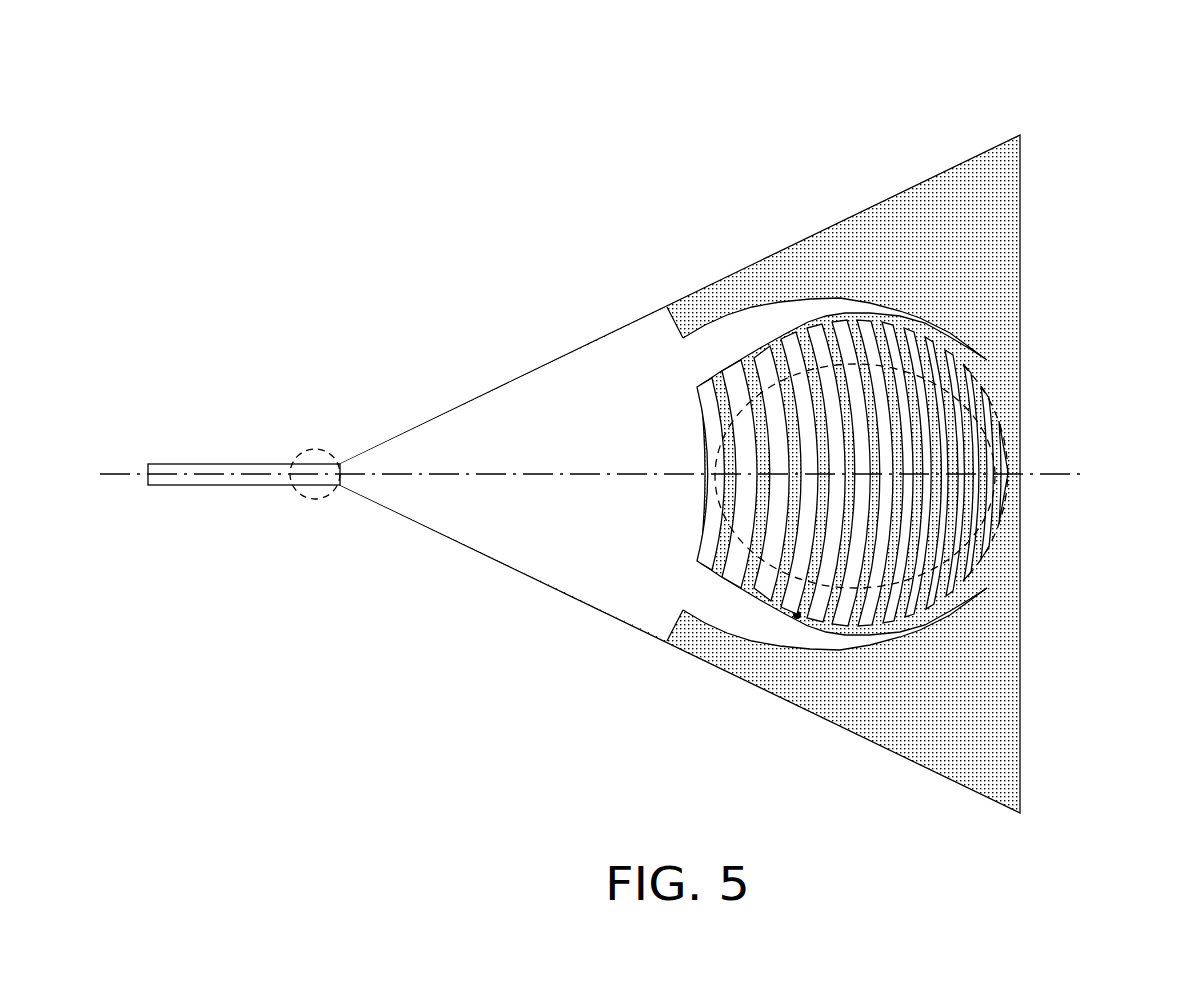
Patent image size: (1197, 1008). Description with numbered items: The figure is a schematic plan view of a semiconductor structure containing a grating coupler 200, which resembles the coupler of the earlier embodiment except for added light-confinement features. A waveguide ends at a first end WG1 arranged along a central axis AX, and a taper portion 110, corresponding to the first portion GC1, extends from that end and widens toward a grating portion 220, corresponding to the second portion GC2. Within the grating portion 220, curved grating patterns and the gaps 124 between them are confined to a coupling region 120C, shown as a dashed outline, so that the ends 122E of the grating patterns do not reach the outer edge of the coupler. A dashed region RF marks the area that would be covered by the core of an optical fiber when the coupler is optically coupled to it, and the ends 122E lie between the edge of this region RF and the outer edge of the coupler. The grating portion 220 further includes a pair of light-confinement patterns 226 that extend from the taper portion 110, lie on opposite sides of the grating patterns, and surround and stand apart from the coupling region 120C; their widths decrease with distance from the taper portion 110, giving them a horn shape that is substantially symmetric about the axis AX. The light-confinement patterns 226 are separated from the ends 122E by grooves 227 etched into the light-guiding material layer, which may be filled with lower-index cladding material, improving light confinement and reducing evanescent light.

The grating coupler 200 is at (799, 93).
The grating portion 220 is at (885, 222).
The taper portion 110 is at (533, 398).
The grooves 227 is at (728, 357).
The light-confinement patterns 226 is at (775, 318).
The gaps 124 is at (931, 592).
The ends of the grating patterns 122E is at (797, 619).
The region covered by a core of the optical fiber RF is at (1002, 410).
The coupling region 120C is at (985, 572).
The first end of the waveguide WG1 is at (333, 448).
The axis AX is at (118, 470).